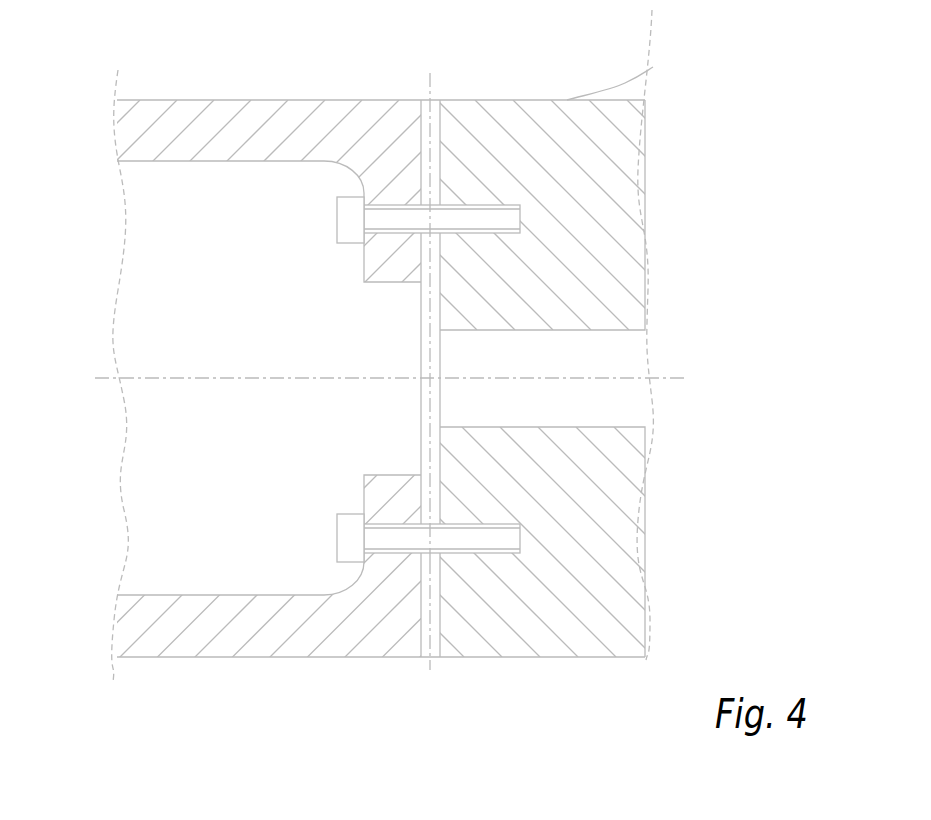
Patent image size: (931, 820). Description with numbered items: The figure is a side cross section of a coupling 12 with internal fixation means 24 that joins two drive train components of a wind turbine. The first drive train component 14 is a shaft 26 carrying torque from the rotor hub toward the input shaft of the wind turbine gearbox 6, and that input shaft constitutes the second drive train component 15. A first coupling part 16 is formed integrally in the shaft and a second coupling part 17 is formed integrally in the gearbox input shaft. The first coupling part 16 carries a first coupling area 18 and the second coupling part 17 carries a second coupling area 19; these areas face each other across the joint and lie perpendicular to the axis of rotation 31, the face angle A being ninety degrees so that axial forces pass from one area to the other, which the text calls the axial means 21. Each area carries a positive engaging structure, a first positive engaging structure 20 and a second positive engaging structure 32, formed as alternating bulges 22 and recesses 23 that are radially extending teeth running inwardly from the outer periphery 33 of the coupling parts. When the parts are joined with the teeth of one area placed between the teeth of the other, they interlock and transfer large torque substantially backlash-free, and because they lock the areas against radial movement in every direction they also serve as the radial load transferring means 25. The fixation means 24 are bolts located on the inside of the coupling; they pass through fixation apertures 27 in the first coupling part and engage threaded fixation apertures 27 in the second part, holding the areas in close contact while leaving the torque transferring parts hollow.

The wind turbine gearbox 6 is at (615, 552).
The coupling 12 is at (440, 87).
The first drive train component 14 is at (185, 125).
The second drive train component 15 is at (567, 100).
The first coupling part 16 is at (402, 610).
The second coupling part 17 is at (473, 608).
The first coupling area 18 is at (413, 28).
The second coupling area 19 is at (448, 615).
The first positive engaging structure 20 is at (433, 123).
The axial means 21 is at (353, 125).
The bulges 22 is at (345, 718).
The recesses 23 is at (507, 690).
The fixation means 24 is at (348, 223).
The radial load transferring means 25 is at (437, 507).
The shaft 26 is at (213, 615).
The fixation apertures 27 is at (397, 518).
The axis of rotation 31 is at (678, 373).
The second positive engaging structure 32 is at (430, 378).
The outer periphery 33 is at (423, 100).
The face angle A is at (412, 138).